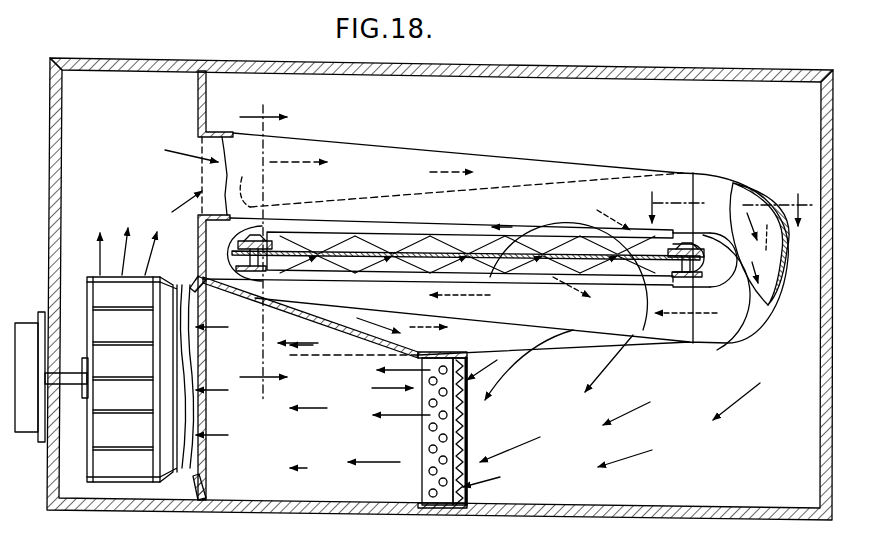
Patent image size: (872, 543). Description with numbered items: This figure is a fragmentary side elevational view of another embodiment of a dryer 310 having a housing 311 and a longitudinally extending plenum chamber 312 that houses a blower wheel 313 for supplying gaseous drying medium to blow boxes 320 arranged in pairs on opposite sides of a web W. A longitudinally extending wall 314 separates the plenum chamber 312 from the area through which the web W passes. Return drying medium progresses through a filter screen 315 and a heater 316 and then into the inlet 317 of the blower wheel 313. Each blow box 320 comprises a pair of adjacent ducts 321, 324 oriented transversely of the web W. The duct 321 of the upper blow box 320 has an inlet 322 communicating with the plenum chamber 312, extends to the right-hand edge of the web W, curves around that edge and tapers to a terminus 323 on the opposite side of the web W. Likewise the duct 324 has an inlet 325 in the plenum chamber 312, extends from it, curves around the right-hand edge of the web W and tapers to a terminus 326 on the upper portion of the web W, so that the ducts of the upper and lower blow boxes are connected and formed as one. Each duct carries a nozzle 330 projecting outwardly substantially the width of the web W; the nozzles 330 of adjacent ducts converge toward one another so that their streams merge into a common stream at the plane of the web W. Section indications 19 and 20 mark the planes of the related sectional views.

The dryer 310 is at (632, 70).
The housing 311 is at (521, 70).
The plenum chamber 312 is at (115, 82).
The blower wheel 313 is at (92, 275).
The longitudinally extending wall 314 is at (198, 104).
The filter screen 315 is at (460, 437).
The heater 316 is at (430, 425).
The inlet of the blower 317 is at (205, 470).
The blow box 320 is at (421, 148).
The duct 321 is at (383, 148).
The inlet 322 is at (207, 141).
The terminus 323 is at (253, 292).
The duct 324 is at (500, 188).
The inlet 325 is at (181, 285).
The terminus 326 is at (241, 176).
The nozzle 330 is at (555, 231).
The web W is at (430, 250).
The section line 19 is at (263, 246).
The section line 20 is at (716, 202).